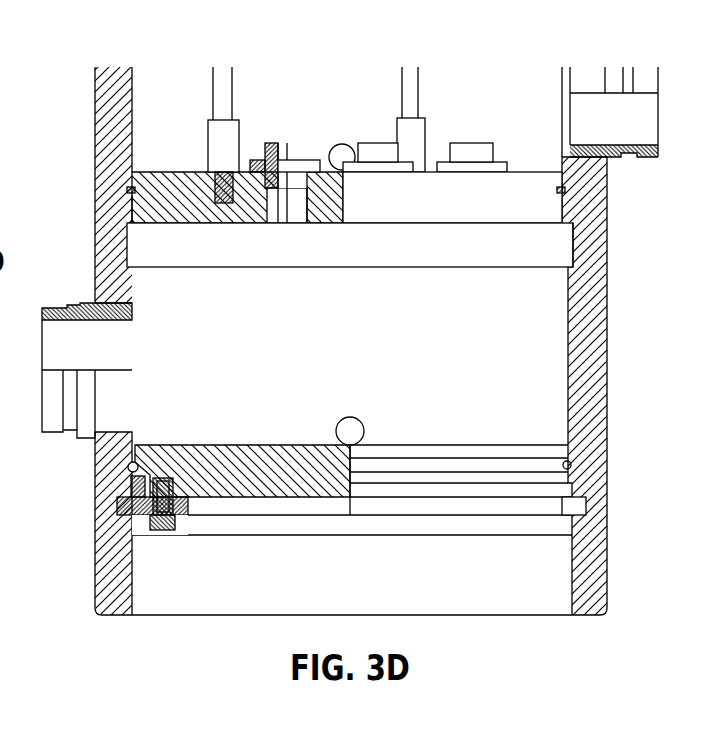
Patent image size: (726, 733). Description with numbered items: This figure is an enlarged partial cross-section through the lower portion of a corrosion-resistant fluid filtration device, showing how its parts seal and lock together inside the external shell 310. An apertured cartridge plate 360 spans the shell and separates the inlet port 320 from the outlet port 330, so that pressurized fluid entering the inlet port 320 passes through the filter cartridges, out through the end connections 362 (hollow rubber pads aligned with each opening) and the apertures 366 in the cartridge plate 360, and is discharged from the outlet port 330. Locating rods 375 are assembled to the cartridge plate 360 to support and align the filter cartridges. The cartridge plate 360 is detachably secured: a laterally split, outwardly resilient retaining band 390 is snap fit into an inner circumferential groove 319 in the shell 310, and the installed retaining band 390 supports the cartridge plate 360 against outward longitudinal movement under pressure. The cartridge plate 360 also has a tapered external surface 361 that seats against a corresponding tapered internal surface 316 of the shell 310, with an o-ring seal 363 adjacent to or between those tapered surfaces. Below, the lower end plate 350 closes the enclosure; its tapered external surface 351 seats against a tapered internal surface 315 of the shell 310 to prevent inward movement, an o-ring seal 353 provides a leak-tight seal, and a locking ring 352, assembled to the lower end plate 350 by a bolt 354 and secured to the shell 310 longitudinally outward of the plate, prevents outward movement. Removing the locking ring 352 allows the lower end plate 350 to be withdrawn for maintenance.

The external shell 310 is at (95, 115).
The tapered internal surface 315 is at (572, 490).
The tapered internal surface 316 is at (557, 190).
The inner circumferential groove 319 is at (572, 245).
The inlet port 320 is at (642, 158).
The outlet port 330 is at (53, 434).
The lower end plate 350 is at (250, 470).
The tapered external surface 351 is at (130, 468).
The locking ring 352 is at (135, 516).
The o-ring seal 353 is at (571, 465).
The bolt 354 is at (167, 530).
The cartridge plate 360 is at (150, 183).
The tapered external surface 361 is at (133, 193).
The end connection 362 is at (283, 146).
The o-ring seal 363 is at (127, 190).
The aperture 366 is at (270, 207).
The locating rod 375 is at (398, 90).
The retaining band 390 is at (133, 247).